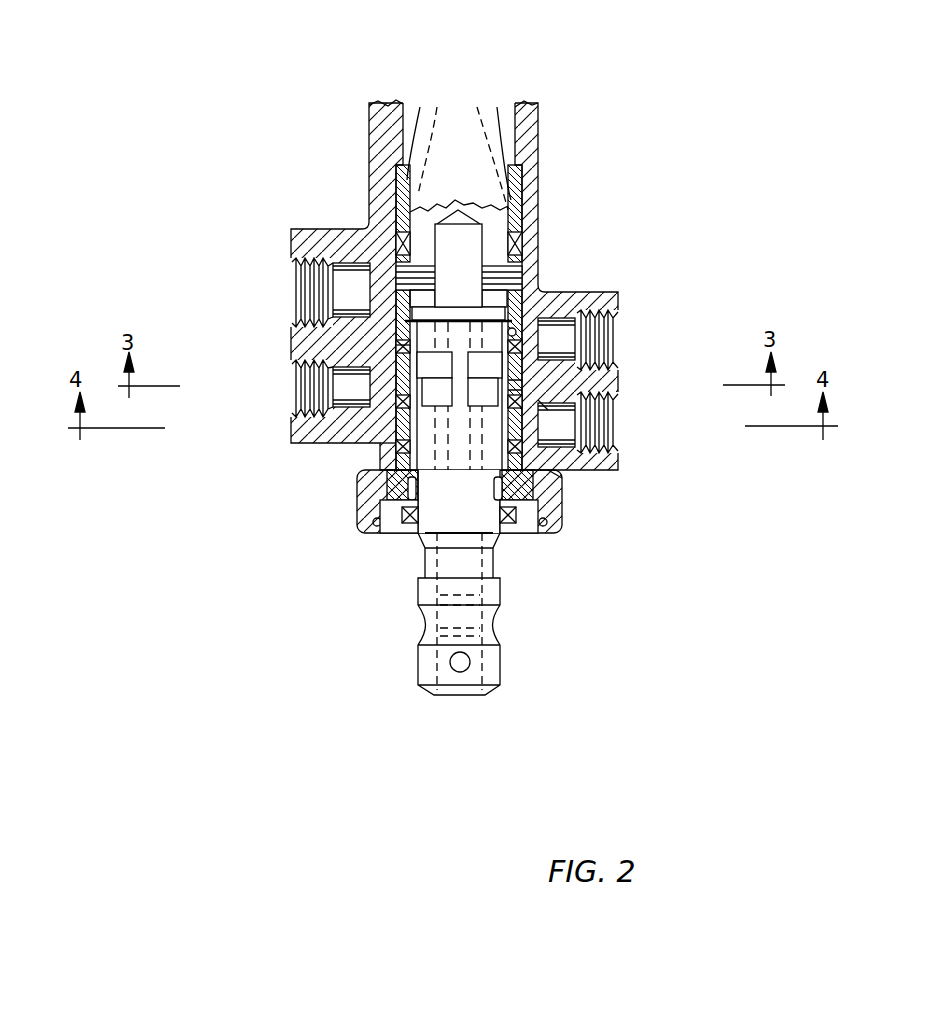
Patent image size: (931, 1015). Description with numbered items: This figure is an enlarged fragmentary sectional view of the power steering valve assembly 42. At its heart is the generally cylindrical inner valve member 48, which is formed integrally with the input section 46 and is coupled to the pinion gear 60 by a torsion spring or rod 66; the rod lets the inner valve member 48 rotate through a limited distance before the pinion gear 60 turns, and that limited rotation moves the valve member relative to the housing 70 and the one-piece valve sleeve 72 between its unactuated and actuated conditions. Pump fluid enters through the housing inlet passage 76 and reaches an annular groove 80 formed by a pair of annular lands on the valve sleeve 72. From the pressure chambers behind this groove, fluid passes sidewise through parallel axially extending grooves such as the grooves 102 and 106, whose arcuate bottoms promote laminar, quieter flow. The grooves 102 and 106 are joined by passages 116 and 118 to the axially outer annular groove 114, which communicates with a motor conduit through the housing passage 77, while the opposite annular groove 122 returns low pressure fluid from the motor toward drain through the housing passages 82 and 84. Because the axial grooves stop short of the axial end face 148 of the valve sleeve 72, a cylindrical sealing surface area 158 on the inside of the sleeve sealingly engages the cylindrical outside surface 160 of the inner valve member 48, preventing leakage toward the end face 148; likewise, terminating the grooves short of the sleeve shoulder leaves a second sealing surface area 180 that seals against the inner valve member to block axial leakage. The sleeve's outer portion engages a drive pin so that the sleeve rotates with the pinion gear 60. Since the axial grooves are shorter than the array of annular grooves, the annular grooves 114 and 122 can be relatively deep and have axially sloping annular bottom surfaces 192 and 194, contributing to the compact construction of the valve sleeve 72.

The valve assembly 42 is at (182, 645).
The input section 46 is at (496, 661).
The inner valve member 48 is at (412, 545).
The pinion gear 60 is at (461, 103).
The torsion spring or rod 66 is at (450, 350).
The housing 70 is at (306, 229).
The valve sleeve 72 is at (375, 470).
The housing inlet passage 76 is at (380, 380).
The housing passage 77 is at (546, 405).
The annular groove 80 is at (380, 412).
The housing passage 82 is at (533, 344).
The housing passage 84 is at (378, 293).
The axially extending groove 102 is at (396, 351).
The axially extending groove 106 is at (524, 388).
The axially outer annular groove 114 is at (365, 453).
The passage 116 is at (386, 442).
The passage 118 is at (520, 433).
The annular groove 122 is at (396, 333).
The axial end face 148 is at (372, 457).
The cylindrical sealing surface area 158 is at (557, 478).
The cylindrical outside surface 160 is at (448, 528).
The second sealing surface area 180 is at (539, 292).
The axially sloping annular bottom surface 192 is at (420, 432).
The axially sloping annular bottom surface 194 is at (388, 320).